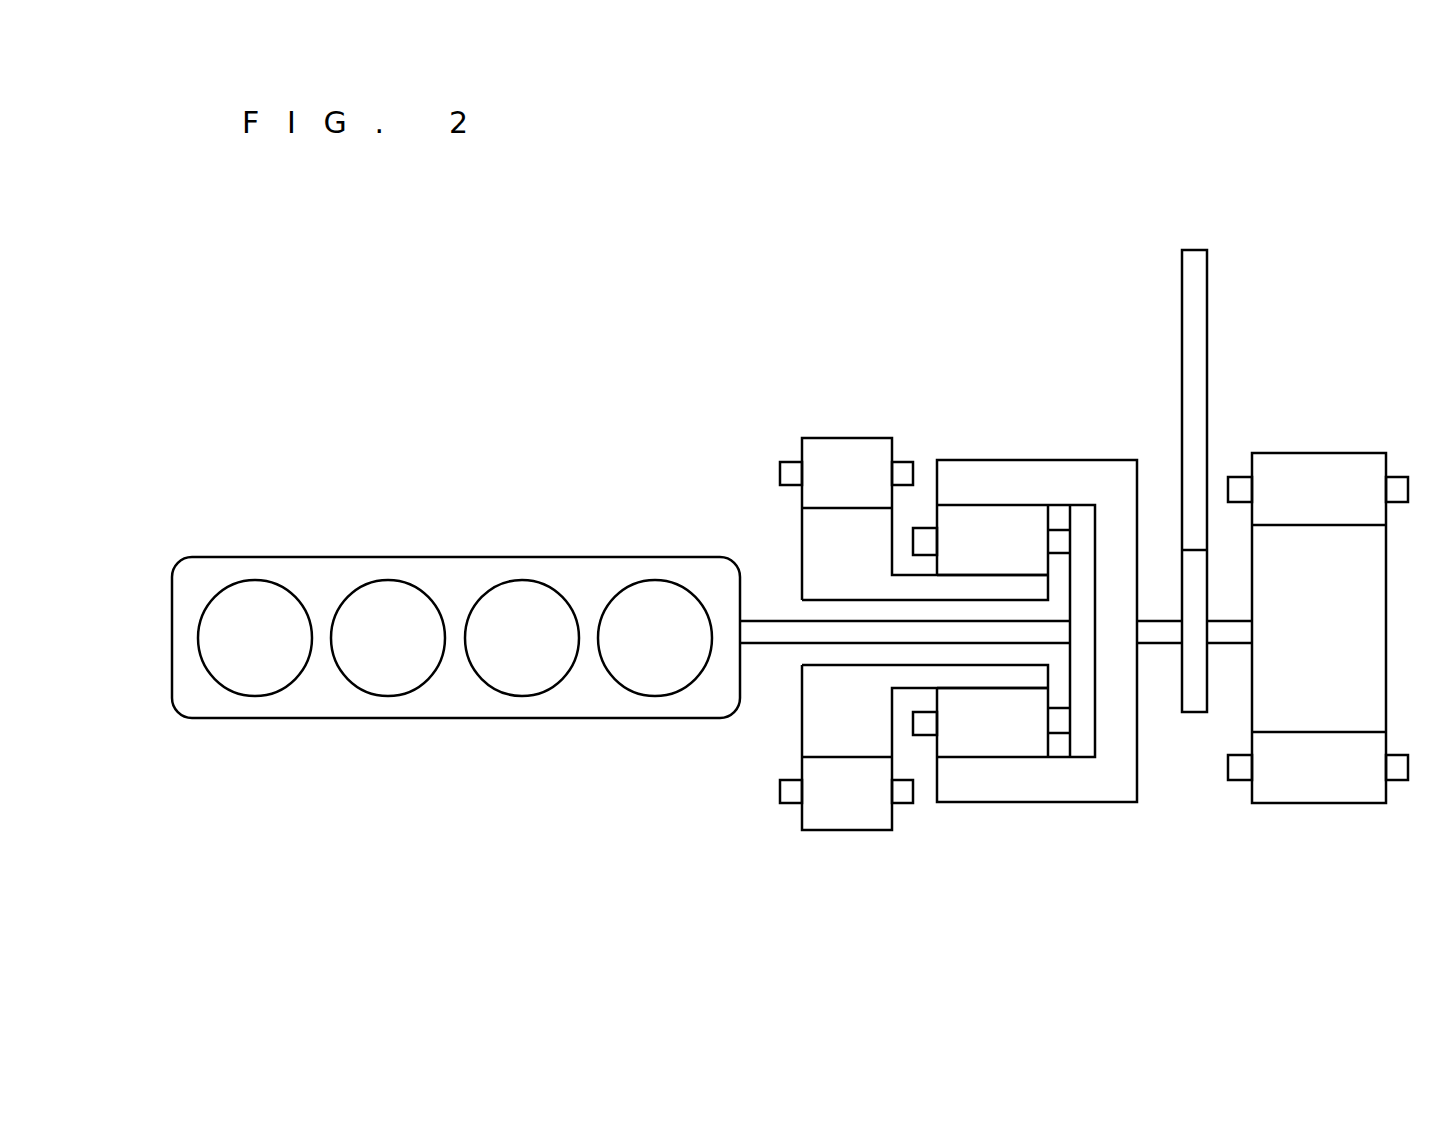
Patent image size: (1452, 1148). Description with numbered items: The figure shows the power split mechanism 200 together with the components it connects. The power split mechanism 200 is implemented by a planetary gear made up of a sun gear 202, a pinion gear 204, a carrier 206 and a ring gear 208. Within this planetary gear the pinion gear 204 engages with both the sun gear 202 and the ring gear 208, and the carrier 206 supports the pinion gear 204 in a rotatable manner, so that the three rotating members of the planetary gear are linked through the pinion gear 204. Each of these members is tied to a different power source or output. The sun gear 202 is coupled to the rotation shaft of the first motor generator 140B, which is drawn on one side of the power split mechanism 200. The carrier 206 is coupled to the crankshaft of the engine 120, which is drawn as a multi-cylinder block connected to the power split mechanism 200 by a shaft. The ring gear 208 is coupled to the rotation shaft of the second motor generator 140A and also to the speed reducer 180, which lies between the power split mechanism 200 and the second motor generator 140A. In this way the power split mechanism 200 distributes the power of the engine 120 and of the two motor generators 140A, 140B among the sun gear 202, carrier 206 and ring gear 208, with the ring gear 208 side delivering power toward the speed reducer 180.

The engine 120 is at (457, 557).
The MG(2) 140A is at (1317, 453).
The MG(1) 140B is at (848, 437).
The speed reducer 180 is at (1217, 223).
The power split mechanism 200 is at (1024, 625).
The sun gear 202 is at (975, 690).
The pinion gear 204 is at (1012, 757).
The carrier 206 is at (1067, 670).
The ring gear 208 is at (1097, 802).